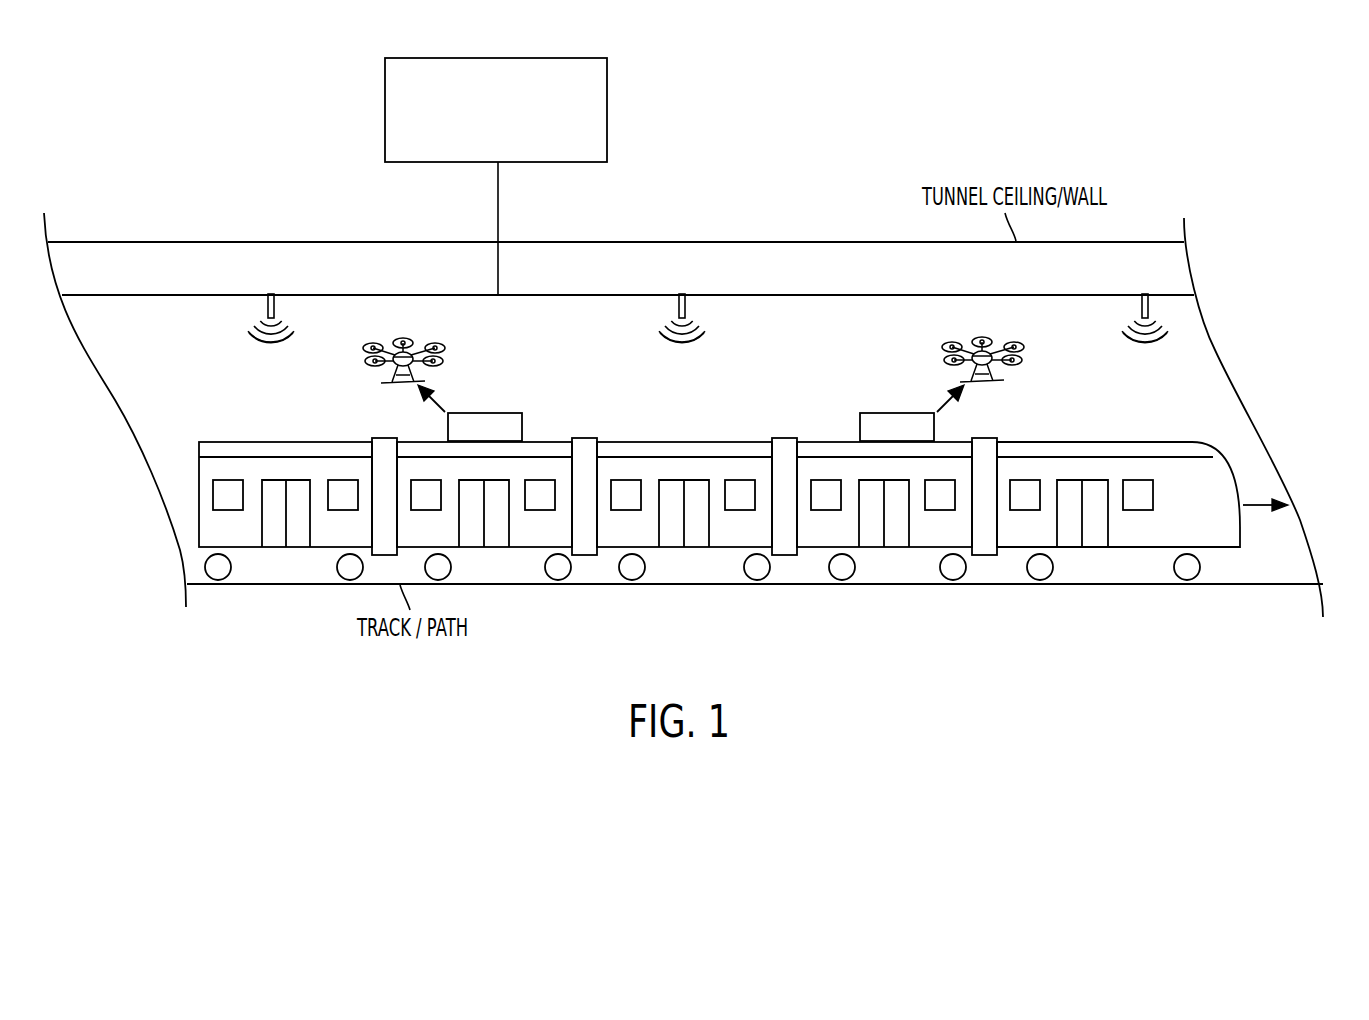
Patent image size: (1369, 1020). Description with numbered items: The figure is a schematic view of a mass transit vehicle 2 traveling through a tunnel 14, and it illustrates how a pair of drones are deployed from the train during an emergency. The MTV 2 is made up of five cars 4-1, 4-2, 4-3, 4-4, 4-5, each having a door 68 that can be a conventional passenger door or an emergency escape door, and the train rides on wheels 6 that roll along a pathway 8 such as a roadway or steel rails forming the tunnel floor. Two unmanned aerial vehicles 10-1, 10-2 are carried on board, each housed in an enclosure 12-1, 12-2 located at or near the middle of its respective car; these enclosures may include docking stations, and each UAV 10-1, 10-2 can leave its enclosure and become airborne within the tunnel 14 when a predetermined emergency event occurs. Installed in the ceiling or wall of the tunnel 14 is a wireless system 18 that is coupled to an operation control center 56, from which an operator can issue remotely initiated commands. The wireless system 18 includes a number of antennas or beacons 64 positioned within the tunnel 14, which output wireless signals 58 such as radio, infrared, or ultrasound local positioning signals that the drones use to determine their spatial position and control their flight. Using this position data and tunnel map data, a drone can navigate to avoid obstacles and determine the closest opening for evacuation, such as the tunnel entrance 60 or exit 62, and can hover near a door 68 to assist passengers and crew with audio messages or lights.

The mass transit vehicle 2 is at (1218, 389).
The car 4-1 is at (1123, 445).
The car 4-2 is at (835, 445).
The car 4-3 is at (648, 445).
The car 4-4 is at (536, 445).
The car 4-5 is at (277, 445).
The wheels 6 is at (218, 580).
The pathway 8 is at (1210, 578).
The unmanned aerial vehicle 10-1 is at (1024, 344).
The unmanned aerial vehicle 10-2 is at (368, 356).
The enclosure 12-1 is at (912, 413).
The enclosure 12-2 is at (470, 413).
The tunnel 14 is at (185, 340).
The wireless system 18 is at (633, 295).
The operation control center 56 is at (597, 57).
The wireless signals 58 is at (260, 340).
The entrance 60 is at (143, 455).
The exit 62 is at (1308, 508).
The antennas or beacons 64 is at (268, 306).
The door 68 is at (304, 520).